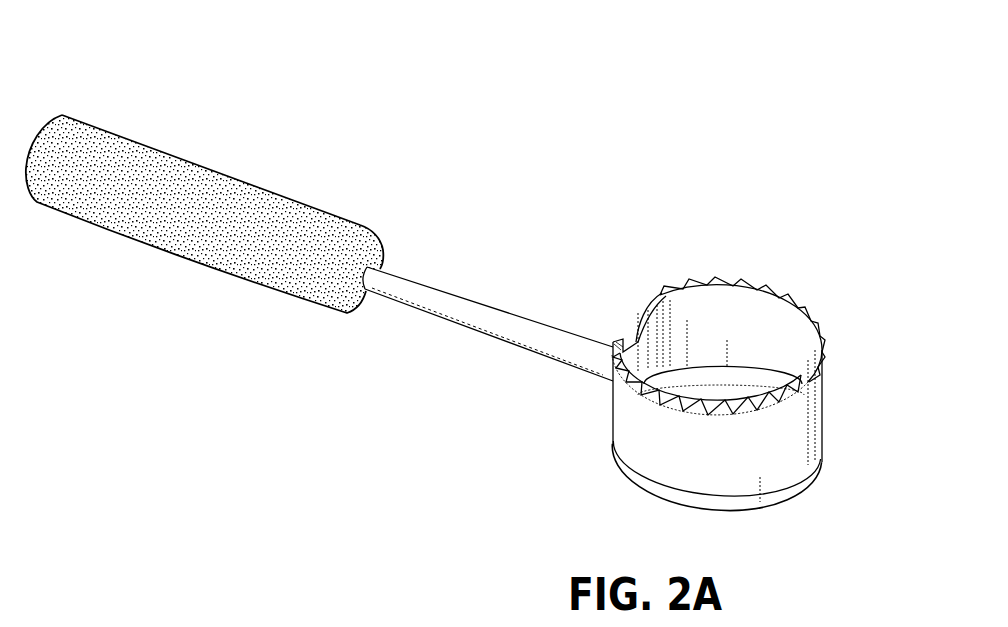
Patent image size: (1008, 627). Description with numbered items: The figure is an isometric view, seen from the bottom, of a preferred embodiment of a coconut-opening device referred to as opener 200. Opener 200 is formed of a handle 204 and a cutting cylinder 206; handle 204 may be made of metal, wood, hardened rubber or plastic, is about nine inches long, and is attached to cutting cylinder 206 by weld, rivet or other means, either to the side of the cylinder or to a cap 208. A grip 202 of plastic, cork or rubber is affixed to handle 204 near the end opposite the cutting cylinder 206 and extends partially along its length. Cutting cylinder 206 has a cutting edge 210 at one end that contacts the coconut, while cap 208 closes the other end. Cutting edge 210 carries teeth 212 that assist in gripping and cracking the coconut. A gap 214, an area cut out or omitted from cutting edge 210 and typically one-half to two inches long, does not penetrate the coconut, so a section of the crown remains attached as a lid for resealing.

The opener 200 is at (523, 158).
The grip 202 is at (222, 243).
The handle 204 is at (487, 315).
The cutting cylinder 206 is at (785, 435).
The cap 208 is at (795, 475).
The cutting edge 210 is at (806, 321).
The teeth 212 is at (800, 385).
The gap 214 is at (637, 343).